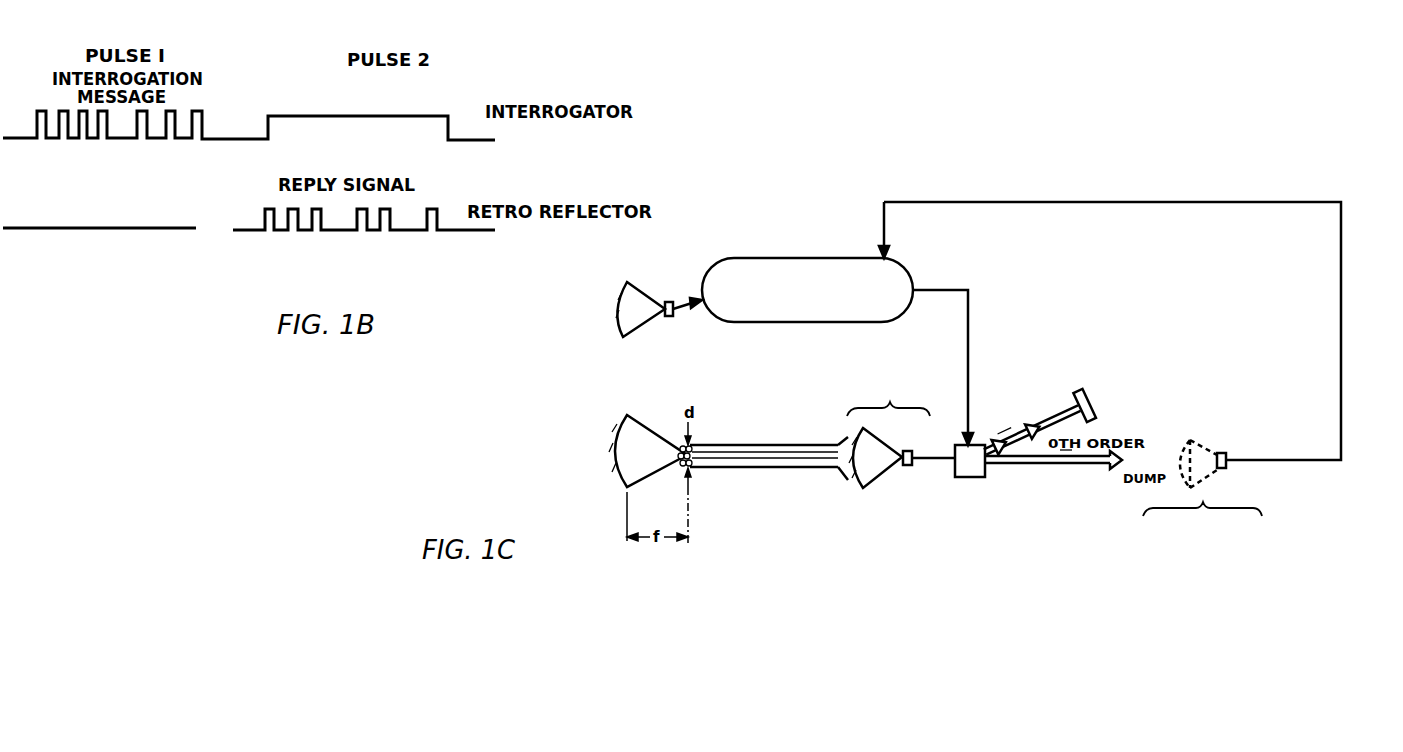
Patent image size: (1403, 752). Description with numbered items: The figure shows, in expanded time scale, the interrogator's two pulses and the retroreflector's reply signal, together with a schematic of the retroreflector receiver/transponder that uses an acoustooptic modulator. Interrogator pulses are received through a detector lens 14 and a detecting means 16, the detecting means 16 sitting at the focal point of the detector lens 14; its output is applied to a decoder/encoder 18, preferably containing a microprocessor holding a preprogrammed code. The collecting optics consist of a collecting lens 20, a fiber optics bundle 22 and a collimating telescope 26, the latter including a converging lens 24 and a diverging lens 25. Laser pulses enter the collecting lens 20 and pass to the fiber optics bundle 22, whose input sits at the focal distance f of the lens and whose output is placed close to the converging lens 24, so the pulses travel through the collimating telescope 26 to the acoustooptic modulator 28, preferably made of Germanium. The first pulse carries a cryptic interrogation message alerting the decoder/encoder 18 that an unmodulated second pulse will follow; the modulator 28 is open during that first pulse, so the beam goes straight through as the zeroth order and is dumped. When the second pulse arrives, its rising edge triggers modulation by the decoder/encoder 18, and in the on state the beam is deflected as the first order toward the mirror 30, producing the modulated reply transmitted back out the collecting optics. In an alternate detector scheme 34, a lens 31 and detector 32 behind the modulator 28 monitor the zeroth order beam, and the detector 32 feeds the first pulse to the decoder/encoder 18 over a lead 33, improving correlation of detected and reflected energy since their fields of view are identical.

The detector lens 14 is at (613, 328).
The detecting means 16 is at (669, 318).
The decoder/encoder 18 is at (907, 271).
The collecting lens 20 is at (608, 440).
The fiber optics bundle 22 is at (1069, 581).
The converging lens 24 is at (862, 490).
The diverging lens 25 is at (907, 468).
The collimating telescope 26 is at (901, 394).
The acoustooptic modulator 28 is at (964, 479).
The mirror 30 is at (1240, 396).
The lens 31 is at (1318, 431).
The detector 32 is at (1222, 470).
The lead 33 is at (1341, 328).
The alternate detector scheme 34 is at (1269, 578).